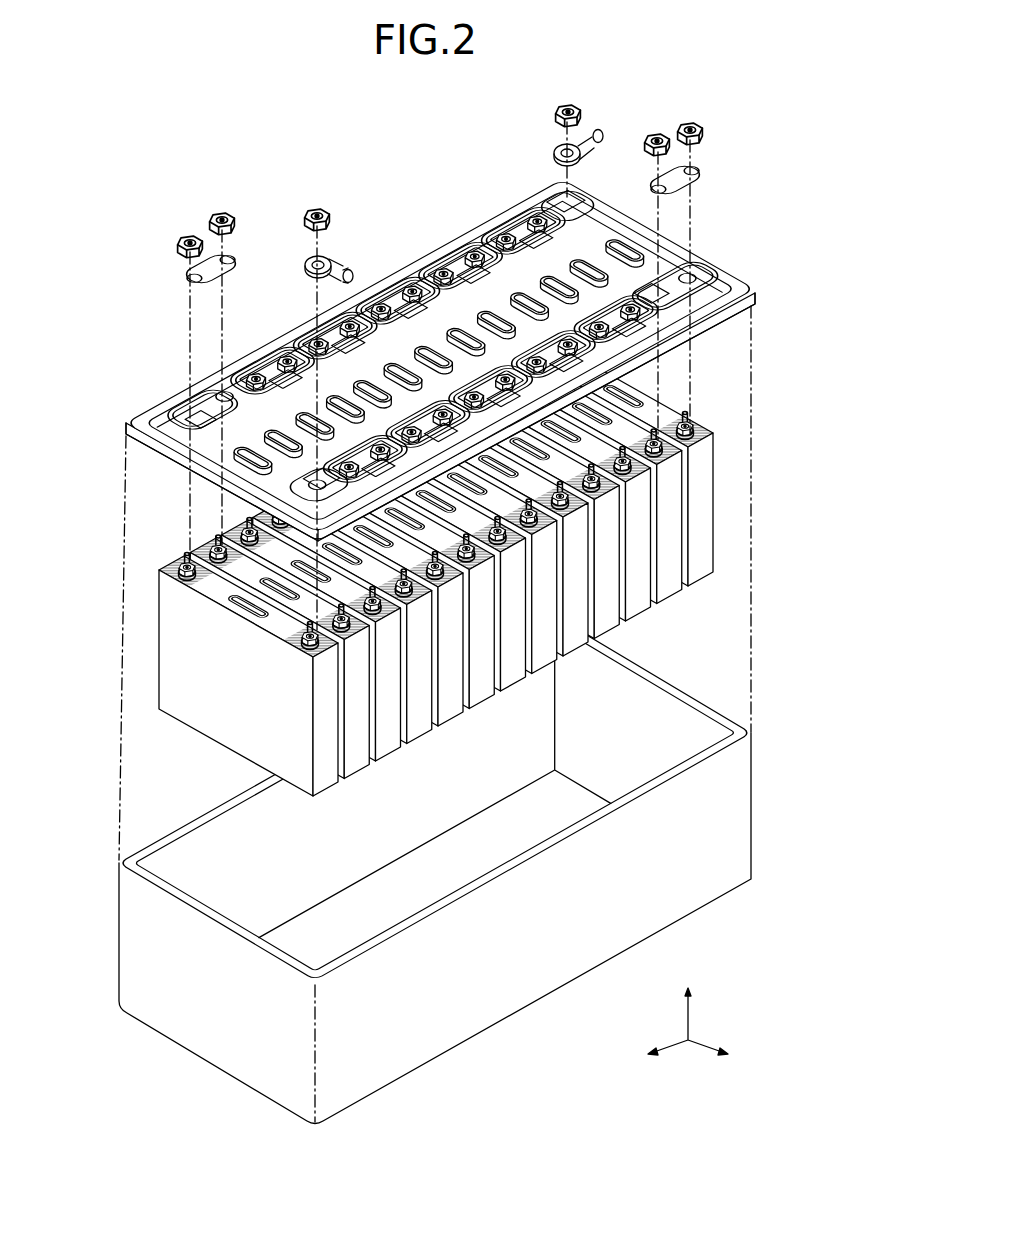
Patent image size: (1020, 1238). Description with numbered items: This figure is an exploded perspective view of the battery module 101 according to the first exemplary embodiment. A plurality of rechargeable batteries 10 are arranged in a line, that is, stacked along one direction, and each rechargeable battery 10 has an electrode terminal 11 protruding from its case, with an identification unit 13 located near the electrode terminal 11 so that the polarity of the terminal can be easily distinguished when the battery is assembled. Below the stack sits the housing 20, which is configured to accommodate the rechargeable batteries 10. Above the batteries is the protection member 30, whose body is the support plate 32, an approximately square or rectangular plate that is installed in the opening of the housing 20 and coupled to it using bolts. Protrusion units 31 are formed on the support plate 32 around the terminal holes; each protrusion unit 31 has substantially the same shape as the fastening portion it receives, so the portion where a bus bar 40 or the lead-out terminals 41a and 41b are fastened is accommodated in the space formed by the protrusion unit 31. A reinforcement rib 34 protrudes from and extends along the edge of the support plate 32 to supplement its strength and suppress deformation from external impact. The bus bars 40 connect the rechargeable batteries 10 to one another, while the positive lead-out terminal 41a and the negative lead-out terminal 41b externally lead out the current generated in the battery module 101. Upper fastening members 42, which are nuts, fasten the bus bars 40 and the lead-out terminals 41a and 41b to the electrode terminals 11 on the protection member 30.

The battery module 101 is at (373, 142).
The rechargeable battery 10 is at (398, 569).
The electrode terminal 11 is at (211, 674).
The identification unit 13 is at (182, 577).
The housing 20 is at (442, 1023).
The protection member 30 is at (417, 360).
The protrusion unit 31 is at (190, 395).
The support plate 32 is at (730, 271).
The reinforcement rib 34 is at (203, 445).
The bus bar 40 is at (183, 275).
The positive lead-out terminal 41a is at (600, 133).
The negative lead-out terminal 41b is at (346, 271).
The upper fastening member 42 is at (217, 213).